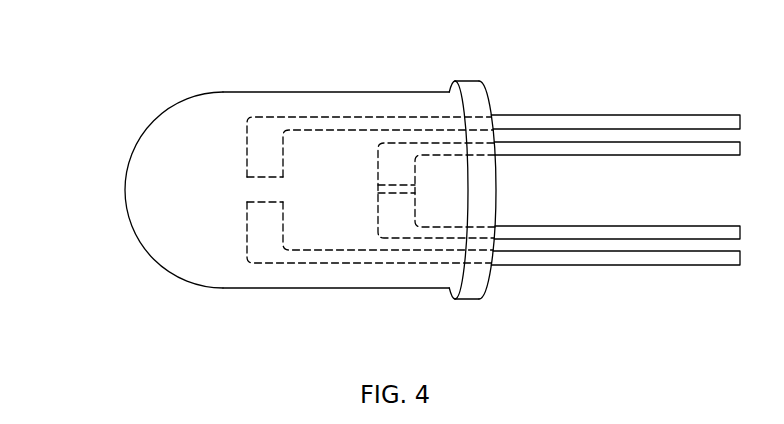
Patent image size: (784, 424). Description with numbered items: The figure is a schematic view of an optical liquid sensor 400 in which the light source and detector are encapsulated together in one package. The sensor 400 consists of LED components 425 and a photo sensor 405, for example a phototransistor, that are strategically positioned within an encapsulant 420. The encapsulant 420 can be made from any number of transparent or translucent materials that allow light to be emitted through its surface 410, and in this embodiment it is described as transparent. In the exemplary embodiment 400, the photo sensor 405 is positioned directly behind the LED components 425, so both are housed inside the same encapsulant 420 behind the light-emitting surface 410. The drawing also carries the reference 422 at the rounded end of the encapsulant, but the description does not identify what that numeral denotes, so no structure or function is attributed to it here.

The LED lamp 400 is at (381, 183).
The LED die 405 is at (399, 143).
The encapsulant body 410 is at (218, 290).
The flange 420 is at (357, 92).
The dome lens 422 is at (123, 214).
The lead frame 425 is at (267, 116).